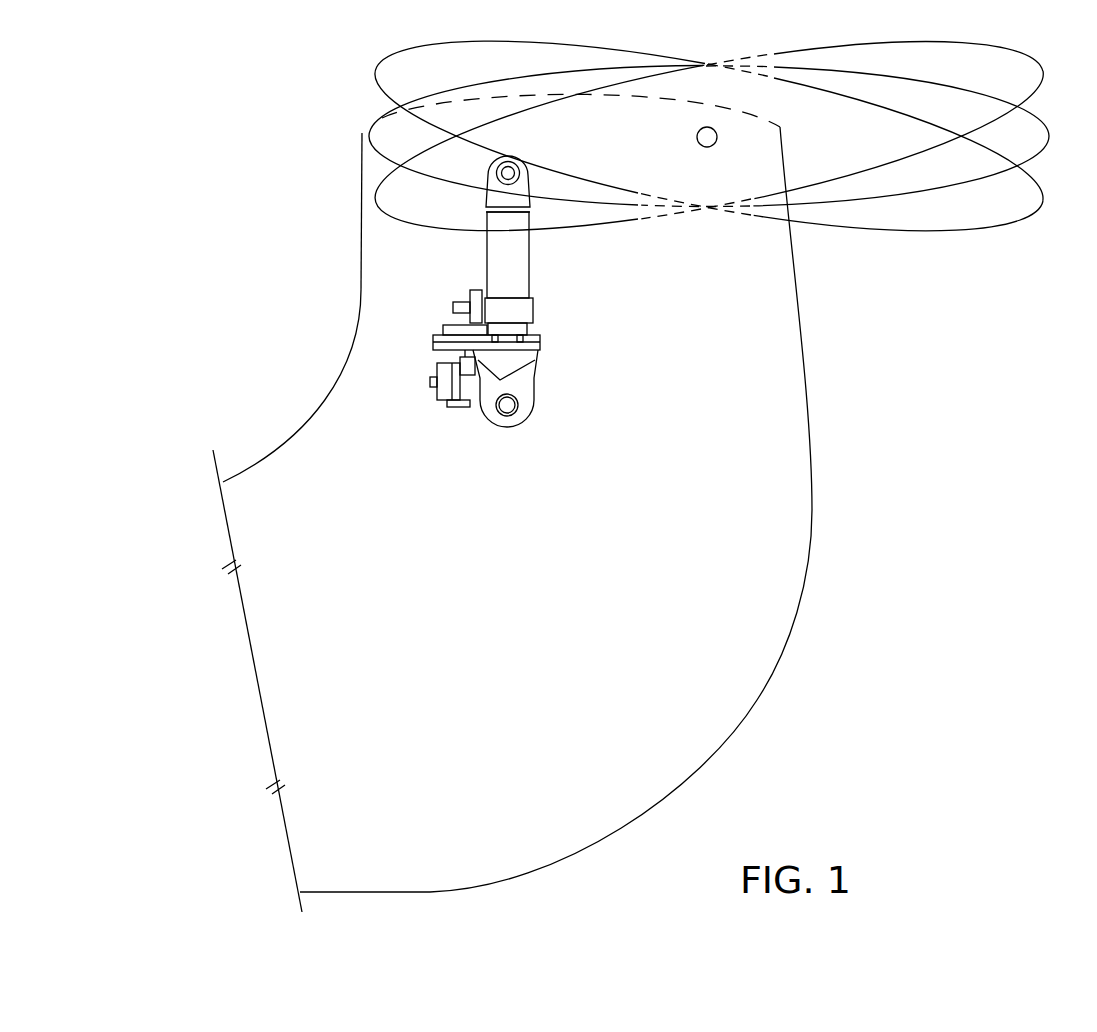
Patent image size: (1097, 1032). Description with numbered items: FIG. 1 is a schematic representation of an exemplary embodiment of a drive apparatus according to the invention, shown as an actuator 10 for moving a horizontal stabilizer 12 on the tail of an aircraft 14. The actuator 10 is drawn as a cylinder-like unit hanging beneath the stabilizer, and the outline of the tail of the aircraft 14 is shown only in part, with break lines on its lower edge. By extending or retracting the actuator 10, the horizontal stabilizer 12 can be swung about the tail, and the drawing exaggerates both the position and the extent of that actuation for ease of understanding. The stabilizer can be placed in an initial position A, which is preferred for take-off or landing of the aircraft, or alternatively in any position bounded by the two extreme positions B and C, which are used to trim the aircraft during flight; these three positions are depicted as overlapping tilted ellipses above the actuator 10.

The actuator 10 is at (443, 268).
The horizontal stabilizer 12 is at (362, 132).
The aircraft 14 is at (290, 437).
The initial position A is at (388, 116).
The position B is at (374, 68).
The position C is at (372, 199).